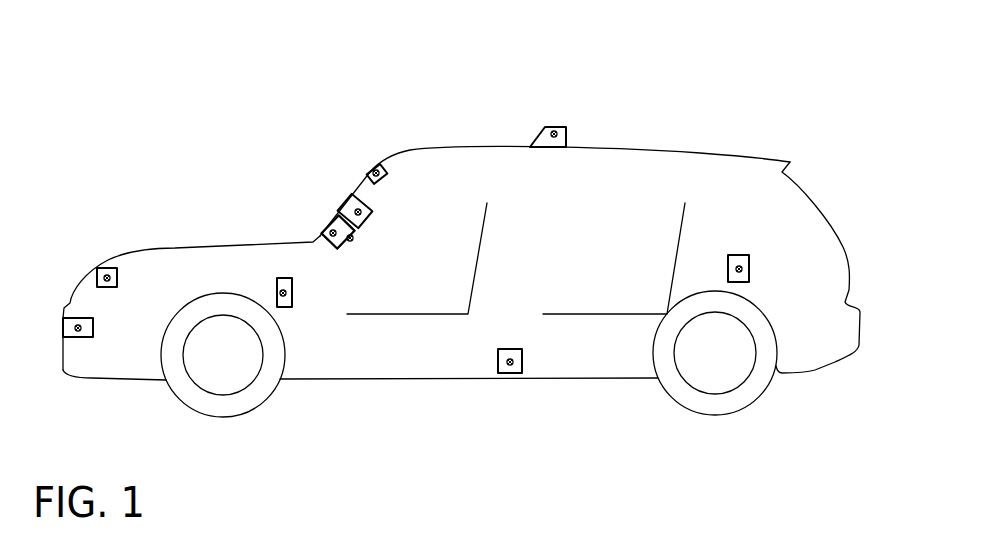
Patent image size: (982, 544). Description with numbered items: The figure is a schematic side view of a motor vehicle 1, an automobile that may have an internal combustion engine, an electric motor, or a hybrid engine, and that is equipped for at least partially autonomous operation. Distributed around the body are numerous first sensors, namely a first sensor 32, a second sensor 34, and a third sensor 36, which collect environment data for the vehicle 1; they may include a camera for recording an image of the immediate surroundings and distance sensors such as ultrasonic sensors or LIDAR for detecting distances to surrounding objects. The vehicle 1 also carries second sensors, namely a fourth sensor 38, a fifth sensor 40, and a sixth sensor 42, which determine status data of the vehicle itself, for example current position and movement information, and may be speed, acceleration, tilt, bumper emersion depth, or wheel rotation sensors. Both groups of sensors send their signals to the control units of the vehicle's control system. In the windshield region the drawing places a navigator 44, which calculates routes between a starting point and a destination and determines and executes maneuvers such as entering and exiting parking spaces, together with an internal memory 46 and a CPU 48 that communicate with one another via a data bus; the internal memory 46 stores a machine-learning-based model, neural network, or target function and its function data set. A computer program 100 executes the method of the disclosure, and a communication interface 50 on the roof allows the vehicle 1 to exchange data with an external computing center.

The motor vehicle 1 is at (205, 88).
The first sensor 32 is at (78, 332).
The second sensor 34 is at (108, 275).
The third sensor 36 is at (376, 170).
The fourth sensor 38 is at (282, 291).
The fifth sensor 40 is at (739, 266).
The sixth sensor 42 is at (512, 368).
The navigator 44 is at (362, 212).
The internal memory 46 is at (332, 230).
The CPU 48 is at (337, 231).
The communication interface 50 is at (555, 131).
The computer program 100 is at (353, 241).